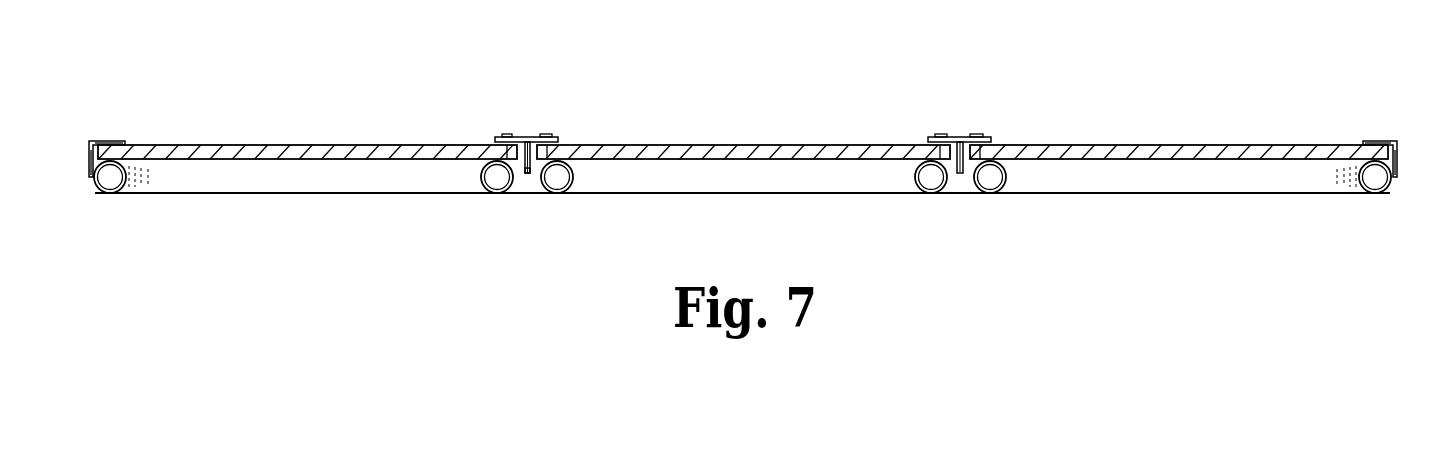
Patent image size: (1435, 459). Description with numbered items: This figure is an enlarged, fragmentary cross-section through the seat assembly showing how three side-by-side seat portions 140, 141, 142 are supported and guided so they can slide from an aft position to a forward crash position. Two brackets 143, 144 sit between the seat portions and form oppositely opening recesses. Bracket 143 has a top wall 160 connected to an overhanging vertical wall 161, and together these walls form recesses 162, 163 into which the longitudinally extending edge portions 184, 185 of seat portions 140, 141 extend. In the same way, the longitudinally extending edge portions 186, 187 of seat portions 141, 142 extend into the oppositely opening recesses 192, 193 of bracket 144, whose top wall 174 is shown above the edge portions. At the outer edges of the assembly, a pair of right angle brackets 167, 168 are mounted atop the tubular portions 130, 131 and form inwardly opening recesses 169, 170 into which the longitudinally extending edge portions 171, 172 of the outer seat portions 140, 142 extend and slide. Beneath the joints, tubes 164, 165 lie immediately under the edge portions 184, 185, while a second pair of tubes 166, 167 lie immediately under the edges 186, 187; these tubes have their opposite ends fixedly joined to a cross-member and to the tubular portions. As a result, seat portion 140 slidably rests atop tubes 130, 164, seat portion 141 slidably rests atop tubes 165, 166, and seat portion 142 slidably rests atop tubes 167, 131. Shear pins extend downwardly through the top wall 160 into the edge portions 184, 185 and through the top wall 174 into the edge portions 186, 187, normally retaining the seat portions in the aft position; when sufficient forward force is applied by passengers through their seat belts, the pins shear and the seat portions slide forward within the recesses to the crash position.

The tubular portion 130 is at (110, 192).
The tubular portion 131 is at (1380, 192).
The seat portion 140 is at (204, 145).
The seat portion 141 is at (730, 145).
The seat portion 142 is at (1289, 145).
The bracket 143 is at (527, 137).
The bracket 144 is at (961, 137).
The top wall 160 is at (560, 138).
The overhanging vertical wall 161 is at (523, 177).
The recess 162 is at (506, 147).
The recess 163 is at (542, 148).
The tube 164 is at (488, 188).
The tube 165 is at (573, 187).
The tube 166 is at (917, 187).
The right angle bracket / tube 167 is at (91, 140).
The right angle bracket 168 is at (1394, 140).
The inwardly opening recess 169 is at (90, 160).
The inwardly opening recess 170 is at (1396, 170).
The longitudinally extending edge portion 171 is at (124, 140).
The longitudinally extending edge portion 172 is at (1363, 140).
The top wall 174 is at (995, 138).
The longitudinally extending edge portion 184 is at (504, 138).
The longitudinally extending edge portion 185 is at (556, 141).
The longitudinally extending edge portion 186 is at (936, 138).
The longitudinally extending edge portion 187 is at (992, 141).
The recess 192 is at (941, 147).
The recess 193 is at (976, 148).